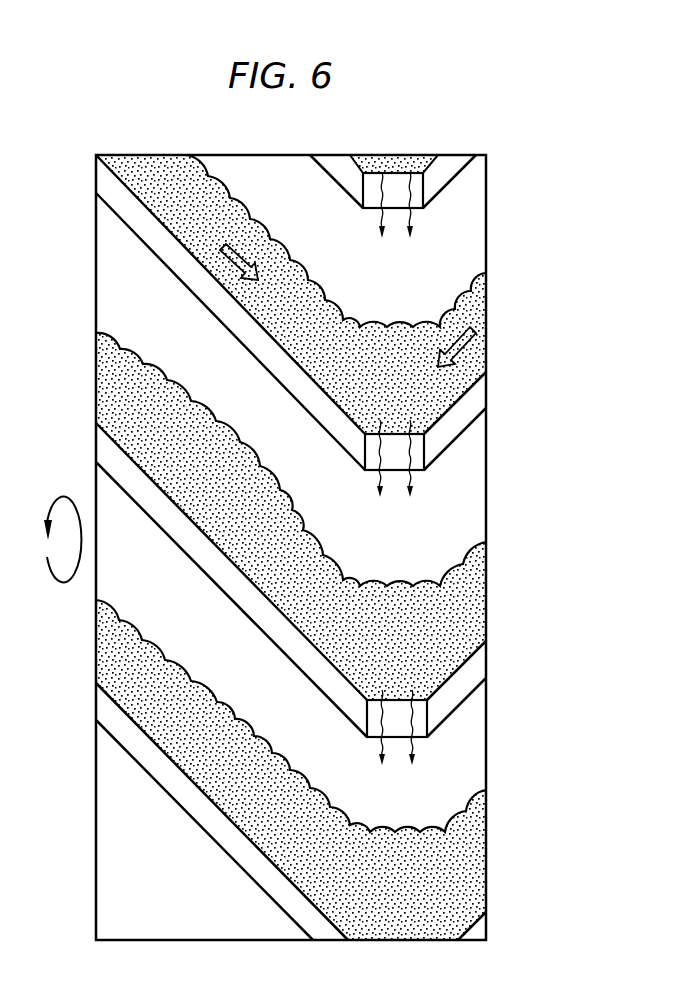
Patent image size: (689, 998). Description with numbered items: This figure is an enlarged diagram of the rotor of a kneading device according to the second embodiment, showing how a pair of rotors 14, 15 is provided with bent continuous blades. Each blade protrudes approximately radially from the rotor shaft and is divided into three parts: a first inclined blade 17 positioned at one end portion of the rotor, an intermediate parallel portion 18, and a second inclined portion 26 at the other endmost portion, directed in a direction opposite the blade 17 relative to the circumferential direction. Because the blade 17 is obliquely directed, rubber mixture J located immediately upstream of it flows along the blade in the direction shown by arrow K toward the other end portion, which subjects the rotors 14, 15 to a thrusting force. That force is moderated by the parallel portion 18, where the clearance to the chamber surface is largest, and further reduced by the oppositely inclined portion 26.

The rotor 14 is at (493, 306).
The rotor 15 is at (291, 636).
The continuous blade 17 is at (277, 384).
The parallel portion 18 is at (416, 469).
The inclined portion 26 is at (477, 395).
The rubber mixture J is at (312, 302).
The arrow K is at (233, 252).